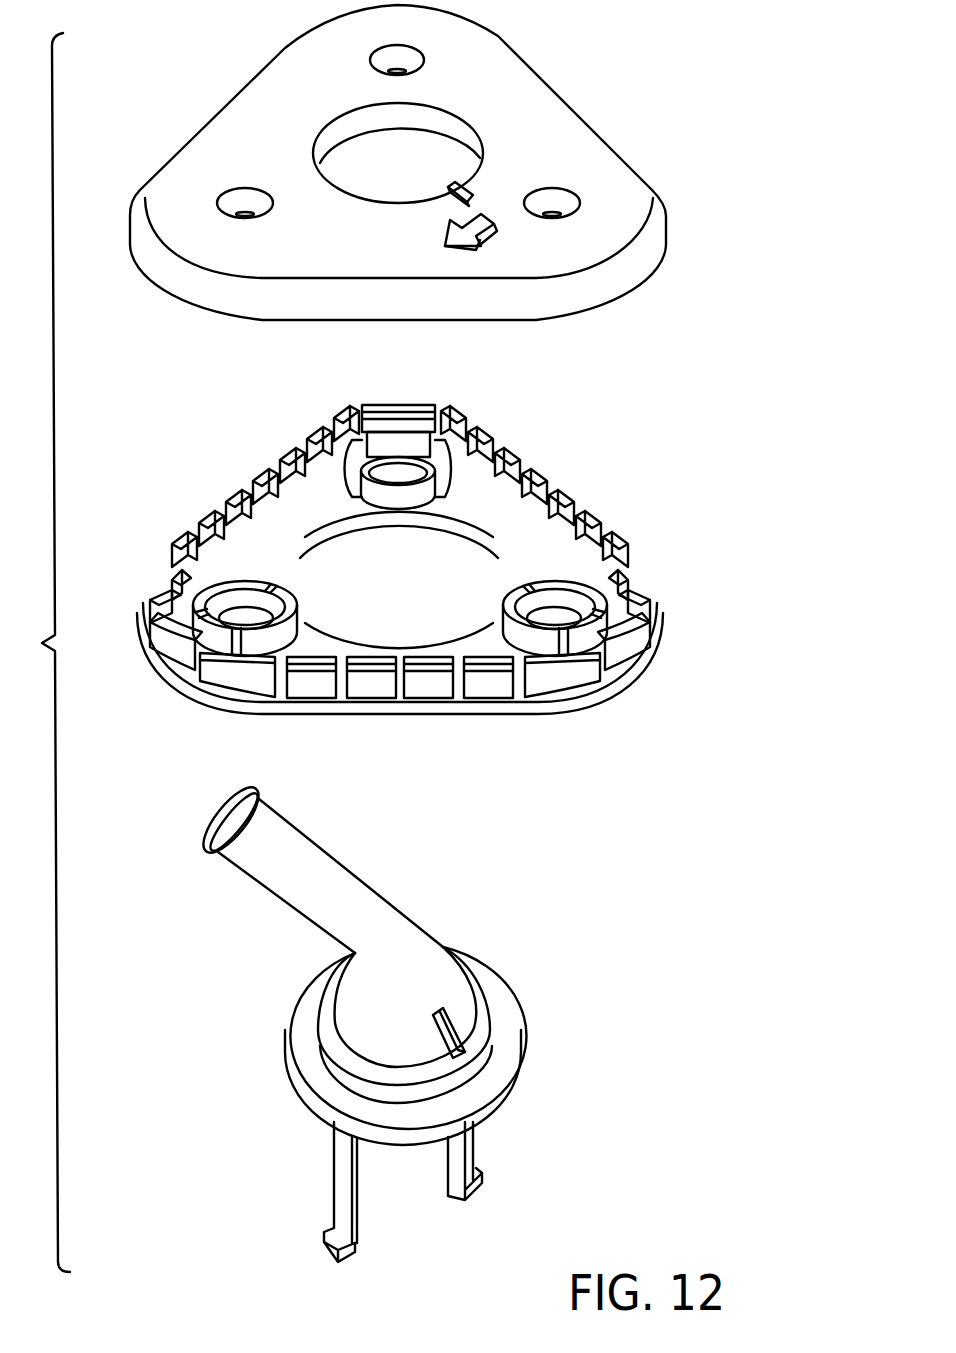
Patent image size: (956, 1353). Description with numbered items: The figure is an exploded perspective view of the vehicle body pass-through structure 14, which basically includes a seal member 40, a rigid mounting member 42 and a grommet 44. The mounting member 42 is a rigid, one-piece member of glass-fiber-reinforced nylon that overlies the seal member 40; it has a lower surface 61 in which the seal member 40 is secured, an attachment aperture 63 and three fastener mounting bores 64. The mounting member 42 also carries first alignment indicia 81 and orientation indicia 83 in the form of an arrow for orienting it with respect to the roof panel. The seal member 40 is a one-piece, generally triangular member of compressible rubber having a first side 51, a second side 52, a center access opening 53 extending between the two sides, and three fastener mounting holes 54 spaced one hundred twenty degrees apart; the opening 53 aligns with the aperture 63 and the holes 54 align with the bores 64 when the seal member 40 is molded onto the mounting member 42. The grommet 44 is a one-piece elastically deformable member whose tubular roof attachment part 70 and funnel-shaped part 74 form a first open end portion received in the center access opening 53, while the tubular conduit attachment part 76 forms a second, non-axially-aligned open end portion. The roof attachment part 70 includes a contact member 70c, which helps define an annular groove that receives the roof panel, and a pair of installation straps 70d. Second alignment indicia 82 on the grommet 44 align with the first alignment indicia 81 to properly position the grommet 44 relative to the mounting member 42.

The vehicle body pass-through structure 14 is at (41, 652).
The rigid mounting member 42 is at (551, 72).
The fastener mounting bores 64 is at (400, 60).
The attachment aperture 63 is at (365, 128).
The first alignment indicia 81 is at (466, 184).
The orientation indicia 83 is at (490, 231).
The lower surface 61 is at (653, 270).
The seal member 40 is at (581, 468).
The first side 51 is at (472, 713).
The second side 52 is at (278, 534).
The center access opening 53 is at (466, 524).
The fastener mounting holes 54 is at (397, 463).
The grommet 44 is at (397, 861).
The tubular conduit attachment part 76 is at (264, 885).
The funnel-shaped part 74 is at (427, 977).
The second alignment indicia 82 is at (447, 1030).
The tubular roof attachment part 70 is at (499, 1100).
The contact member 70c is at (320, 1075).
The installation elements or straps 70d is at (456, 1163).